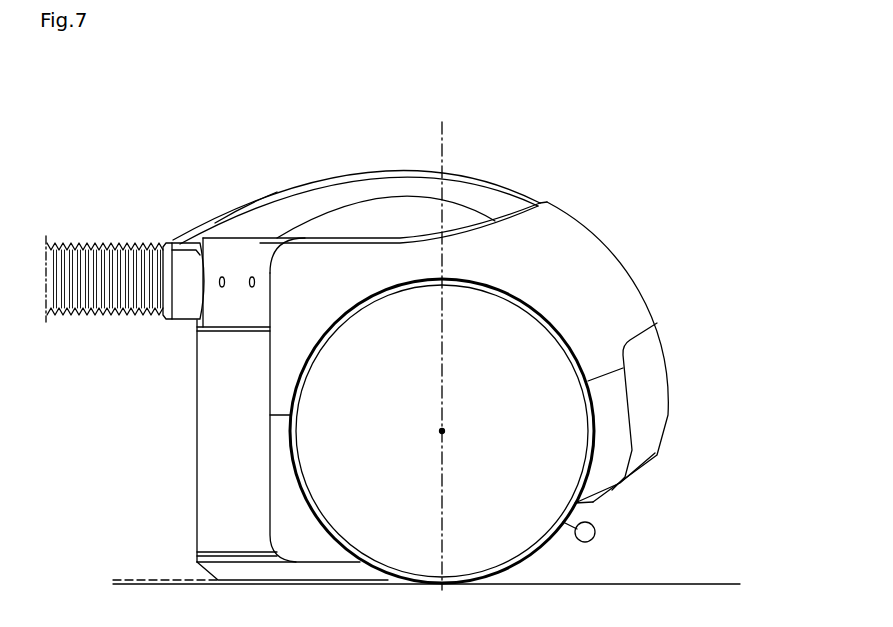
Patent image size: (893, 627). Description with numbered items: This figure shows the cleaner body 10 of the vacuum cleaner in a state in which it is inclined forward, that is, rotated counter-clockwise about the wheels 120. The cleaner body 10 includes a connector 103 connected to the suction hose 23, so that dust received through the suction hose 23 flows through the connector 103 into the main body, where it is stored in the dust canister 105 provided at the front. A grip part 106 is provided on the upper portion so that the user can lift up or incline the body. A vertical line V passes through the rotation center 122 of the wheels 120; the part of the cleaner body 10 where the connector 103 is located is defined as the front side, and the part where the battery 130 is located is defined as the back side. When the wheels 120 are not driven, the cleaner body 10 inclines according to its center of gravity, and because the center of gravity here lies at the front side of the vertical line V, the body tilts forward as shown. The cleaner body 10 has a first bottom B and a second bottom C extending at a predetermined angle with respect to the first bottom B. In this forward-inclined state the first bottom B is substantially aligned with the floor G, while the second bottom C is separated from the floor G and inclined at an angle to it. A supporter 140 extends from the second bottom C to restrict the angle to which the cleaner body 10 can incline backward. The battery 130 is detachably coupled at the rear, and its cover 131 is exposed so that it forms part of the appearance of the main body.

The cleaner body 10 is at (581, 143).
The suction hose 23 is at (100, 240).
The connector 103 is at (186, 265).
The dust canister 105 is at (217, 477).
The grip part 106 is at (373, 185).
The wheels 120 is at (330, 395).
The rotation center 122 is at (444, 430).
The battery 130 is at (678, 396).
The cover 131 is at (660, 345).
The supporter 140 is at (597, 531).
The vertical line V is at (442, 344).
The second bottom C is at (612, 492).
The first bottom B is at (164, 567).
The floor G is at (424, 598).